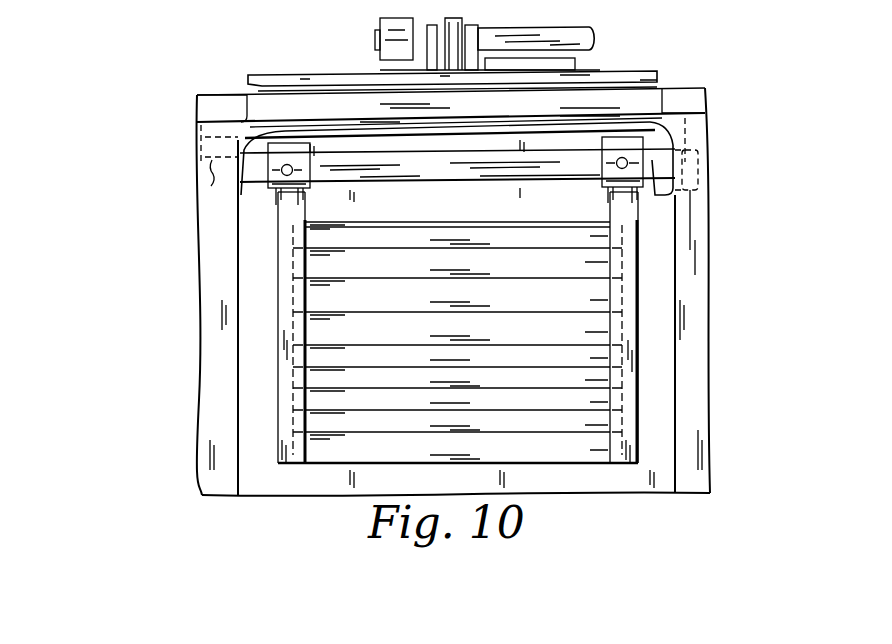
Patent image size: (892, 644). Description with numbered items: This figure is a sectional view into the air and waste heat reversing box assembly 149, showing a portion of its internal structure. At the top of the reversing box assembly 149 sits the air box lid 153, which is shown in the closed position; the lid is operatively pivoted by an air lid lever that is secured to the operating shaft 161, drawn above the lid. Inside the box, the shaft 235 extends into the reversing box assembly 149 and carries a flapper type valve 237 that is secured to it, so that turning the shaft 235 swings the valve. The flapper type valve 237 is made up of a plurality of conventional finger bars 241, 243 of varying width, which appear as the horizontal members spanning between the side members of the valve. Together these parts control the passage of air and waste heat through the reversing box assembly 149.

The air and waste heat reversing box assembly 149 is at (178, 322).
The air box lid 153 is at (312, 76).
The operating shaft 161 is at (548, 38).
The shaft 235 is at (462, 172).
The flapper type valve 237 is at (283, 254).
The finger bar 241 is at (604, 289).
The finger bar 243 is at (594, 369).